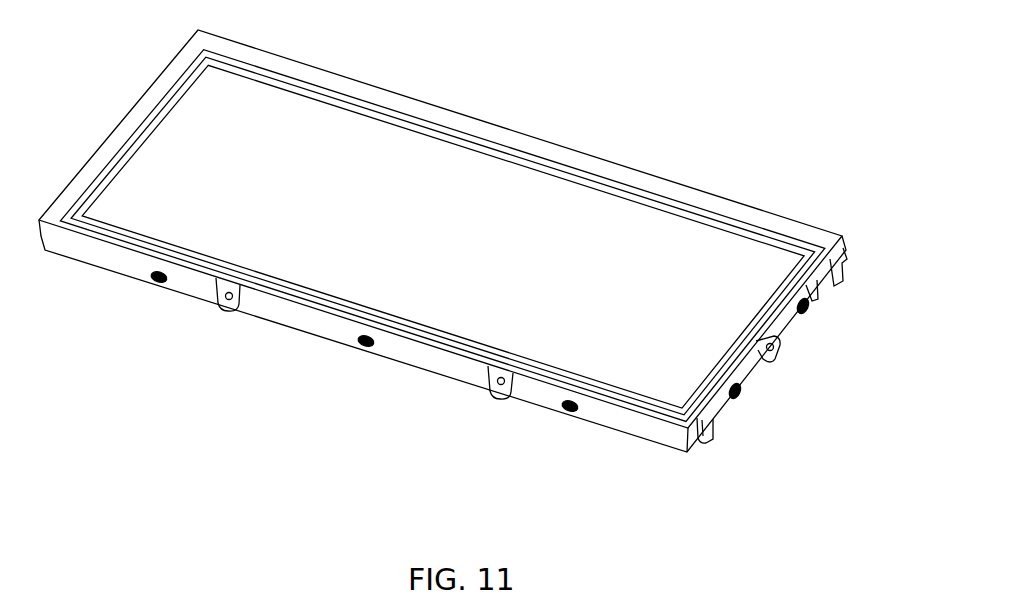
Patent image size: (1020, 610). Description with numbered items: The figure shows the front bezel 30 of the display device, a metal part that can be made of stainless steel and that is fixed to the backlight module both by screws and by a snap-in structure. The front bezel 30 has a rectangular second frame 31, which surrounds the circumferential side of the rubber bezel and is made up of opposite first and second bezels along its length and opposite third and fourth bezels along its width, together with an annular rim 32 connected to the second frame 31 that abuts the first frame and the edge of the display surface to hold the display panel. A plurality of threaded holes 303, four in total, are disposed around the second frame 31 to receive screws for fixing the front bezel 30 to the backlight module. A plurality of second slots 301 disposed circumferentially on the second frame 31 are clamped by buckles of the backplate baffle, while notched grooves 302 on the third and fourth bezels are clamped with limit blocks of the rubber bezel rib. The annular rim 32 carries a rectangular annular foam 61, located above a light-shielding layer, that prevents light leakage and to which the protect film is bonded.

The front bezel 30 is at (621, 163).
The second frame 31 is at (107, 257).
The annular rim 32 is at (88, 182).
The annular foam 61 is at (683, 204).
The second slot 301 is at (572, 412).
The notched groove 302 is at (841, 254).
The threaded hole 303 is at (502, 390).